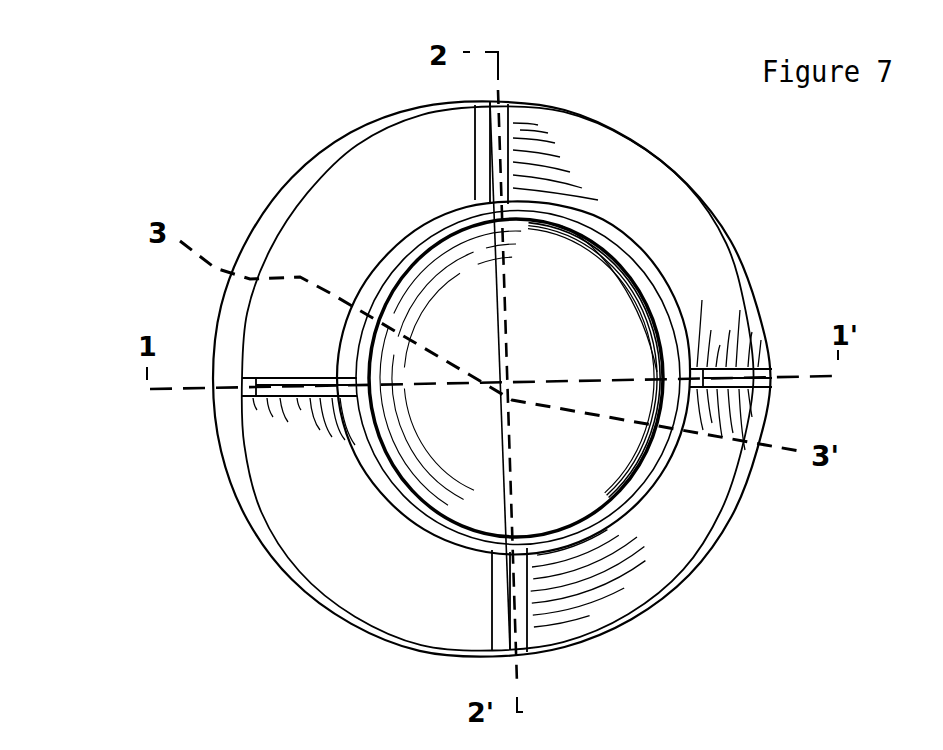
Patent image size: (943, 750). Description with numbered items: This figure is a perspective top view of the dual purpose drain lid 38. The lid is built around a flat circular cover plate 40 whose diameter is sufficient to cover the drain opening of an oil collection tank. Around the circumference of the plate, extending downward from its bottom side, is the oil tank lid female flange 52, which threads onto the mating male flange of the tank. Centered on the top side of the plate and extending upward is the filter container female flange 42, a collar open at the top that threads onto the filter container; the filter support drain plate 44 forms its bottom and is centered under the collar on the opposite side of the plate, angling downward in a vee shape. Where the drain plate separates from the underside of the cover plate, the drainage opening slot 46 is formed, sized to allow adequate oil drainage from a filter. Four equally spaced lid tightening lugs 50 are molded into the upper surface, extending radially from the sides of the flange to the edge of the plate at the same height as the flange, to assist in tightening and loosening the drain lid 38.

The drain lid 38 is at (202, 475).
The circular cover plate 40 is at (317, 285).
The filter container female flange 42 is at (665, 455).
The filter support drain plate 44 is at (547, 410).
The drainage opening slot 46 is at (652, 362).
The lid tightening lugs 50 is at (483, 608).
The oil tank lid female flange 52 is at (232, 322).